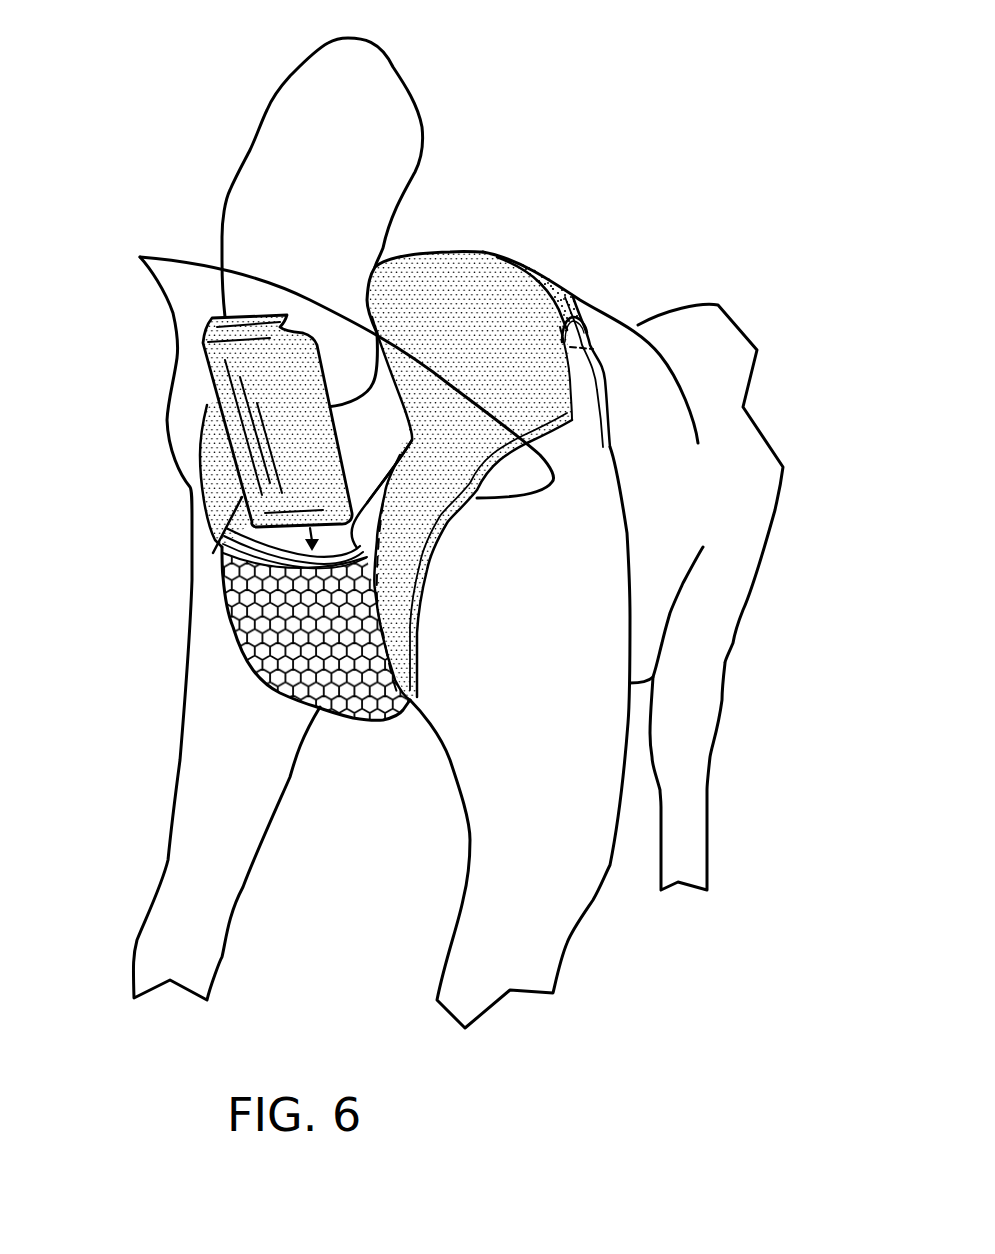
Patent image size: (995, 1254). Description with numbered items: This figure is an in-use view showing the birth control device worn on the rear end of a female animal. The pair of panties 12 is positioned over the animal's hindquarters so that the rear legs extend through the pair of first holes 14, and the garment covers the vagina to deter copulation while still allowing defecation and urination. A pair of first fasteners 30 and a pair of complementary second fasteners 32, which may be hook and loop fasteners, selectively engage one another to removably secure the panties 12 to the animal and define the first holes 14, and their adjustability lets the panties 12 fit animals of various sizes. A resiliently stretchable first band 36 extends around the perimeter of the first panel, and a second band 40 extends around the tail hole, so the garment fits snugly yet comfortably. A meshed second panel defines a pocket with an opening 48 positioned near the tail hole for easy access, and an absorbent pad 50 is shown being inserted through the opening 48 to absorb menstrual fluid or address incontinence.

The pair of panties 12 is at (456, 318).
The first holes 14 is at (140, 257).
The first fasteners 30 is at (545, 290).
The second fasteners 32 is at (578, 335).
The first band 36 is at (557, 430).
The second band 40 is at (403, 440).
The opening 48 is at (290, 557).
The pad 50 is at (263, 452).